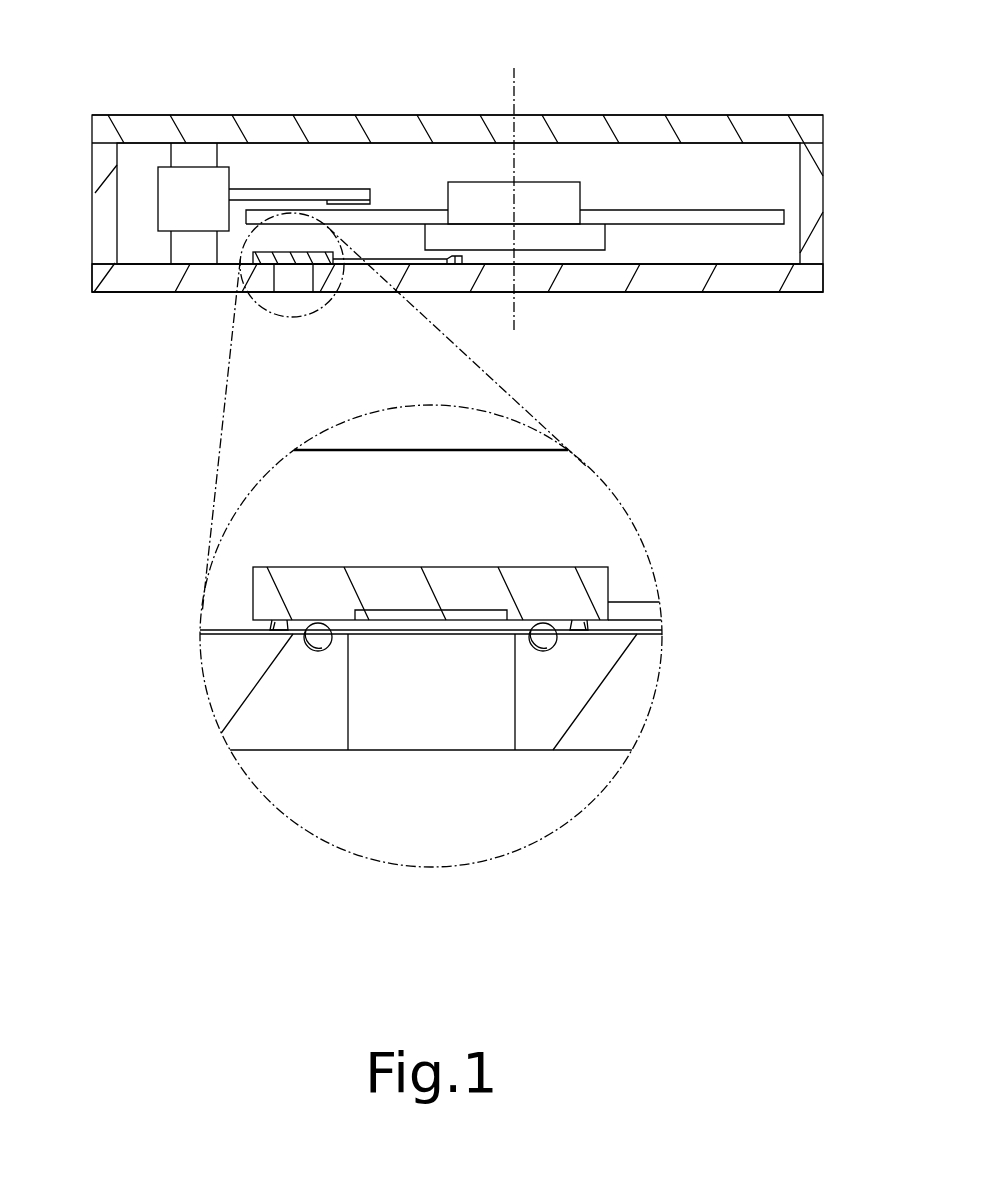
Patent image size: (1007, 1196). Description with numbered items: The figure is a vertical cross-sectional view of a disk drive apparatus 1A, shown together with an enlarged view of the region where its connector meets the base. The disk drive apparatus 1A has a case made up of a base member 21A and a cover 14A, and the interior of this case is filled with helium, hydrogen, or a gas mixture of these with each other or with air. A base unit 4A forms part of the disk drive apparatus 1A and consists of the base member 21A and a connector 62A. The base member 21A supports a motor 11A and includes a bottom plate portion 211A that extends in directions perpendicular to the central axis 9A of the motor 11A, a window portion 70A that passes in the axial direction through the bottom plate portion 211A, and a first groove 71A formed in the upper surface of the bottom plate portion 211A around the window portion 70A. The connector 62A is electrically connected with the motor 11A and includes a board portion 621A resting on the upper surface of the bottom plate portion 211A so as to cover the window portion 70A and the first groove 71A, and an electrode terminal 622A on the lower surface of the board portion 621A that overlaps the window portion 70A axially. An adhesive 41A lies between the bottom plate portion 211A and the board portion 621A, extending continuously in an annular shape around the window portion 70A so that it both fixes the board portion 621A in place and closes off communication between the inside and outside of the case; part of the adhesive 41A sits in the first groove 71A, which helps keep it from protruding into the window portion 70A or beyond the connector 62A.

The disk drive apparatus 1A is at (188, 91).
The central axis 9A is at (512, 86).
The motor 11A is at (546, 200).
The cover 14A is at (640, 130).
The base member 21A is at (165, 298).
The base unit 4A is at (215, 399).
The bottom plate portion 211A is at (660, 278).
The connector 62A is at (262, 293).
The board portion 621A is at (474, 592).
The electrode terminal 622A is at (428, 617).
The adhesive 41A is at (566, 630).
The window portion 70A is at (392, 711).
The first groove 71A is at (541, 622).